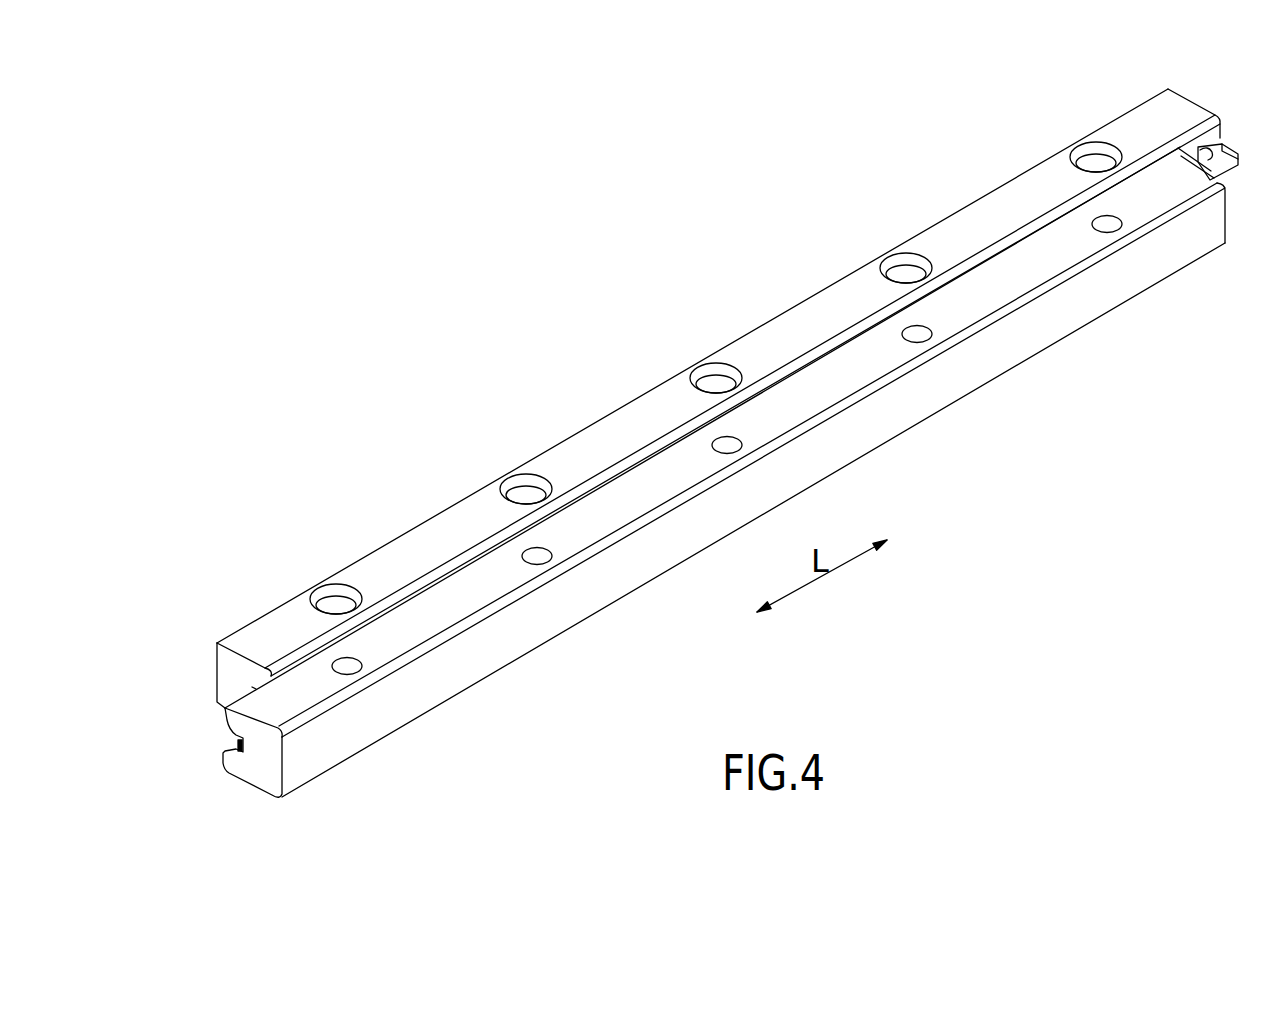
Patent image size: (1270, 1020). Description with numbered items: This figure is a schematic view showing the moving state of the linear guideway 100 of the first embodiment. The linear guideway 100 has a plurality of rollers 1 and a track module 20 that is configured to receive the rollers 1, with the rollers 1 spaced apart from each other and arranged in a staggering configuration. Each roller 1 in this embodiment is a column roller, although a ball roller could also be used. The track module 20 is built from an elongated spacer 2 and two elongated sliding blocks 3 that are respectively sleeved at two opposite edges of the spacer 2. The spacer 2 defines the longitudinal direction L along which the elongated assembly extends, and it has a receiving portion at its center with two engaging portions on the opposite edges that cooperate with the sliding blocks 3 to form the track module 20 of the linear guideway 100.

The linear guideway 100 is at (265, 124).
The roller 1 is at (1197, 155).
The spacer 2 is at (1237, 168).
The sliding block 3 is at (1163, 270).
The track module 20 is at (1265, 289).